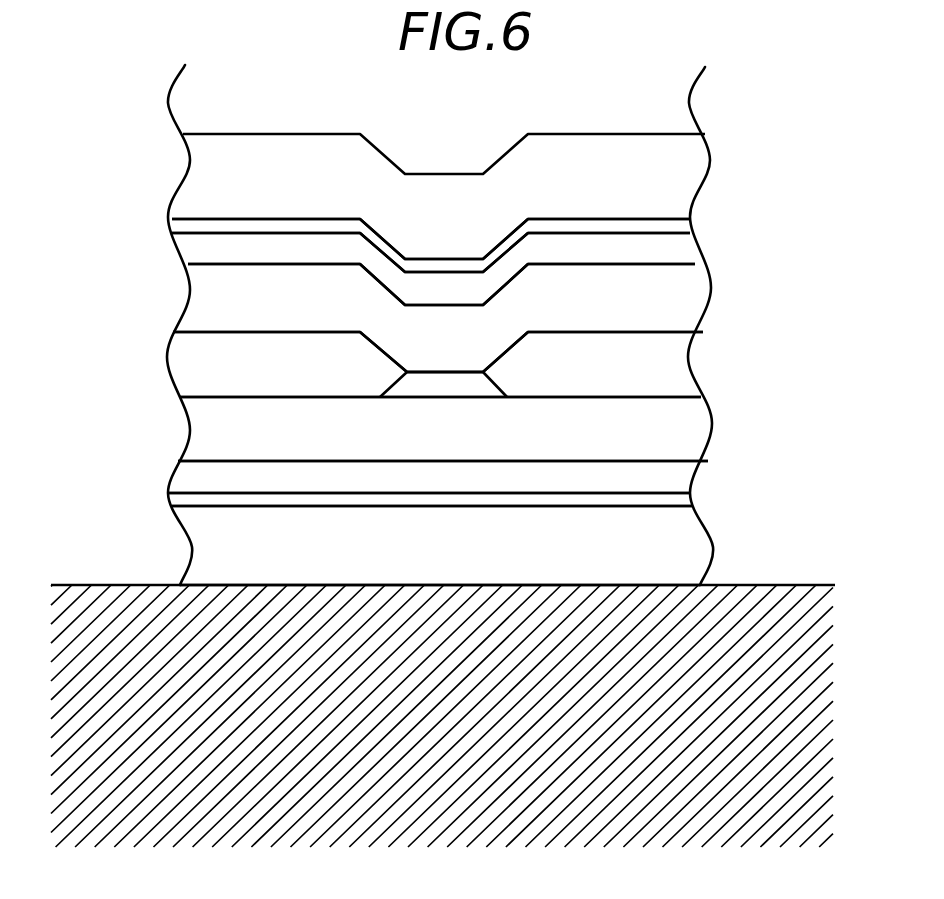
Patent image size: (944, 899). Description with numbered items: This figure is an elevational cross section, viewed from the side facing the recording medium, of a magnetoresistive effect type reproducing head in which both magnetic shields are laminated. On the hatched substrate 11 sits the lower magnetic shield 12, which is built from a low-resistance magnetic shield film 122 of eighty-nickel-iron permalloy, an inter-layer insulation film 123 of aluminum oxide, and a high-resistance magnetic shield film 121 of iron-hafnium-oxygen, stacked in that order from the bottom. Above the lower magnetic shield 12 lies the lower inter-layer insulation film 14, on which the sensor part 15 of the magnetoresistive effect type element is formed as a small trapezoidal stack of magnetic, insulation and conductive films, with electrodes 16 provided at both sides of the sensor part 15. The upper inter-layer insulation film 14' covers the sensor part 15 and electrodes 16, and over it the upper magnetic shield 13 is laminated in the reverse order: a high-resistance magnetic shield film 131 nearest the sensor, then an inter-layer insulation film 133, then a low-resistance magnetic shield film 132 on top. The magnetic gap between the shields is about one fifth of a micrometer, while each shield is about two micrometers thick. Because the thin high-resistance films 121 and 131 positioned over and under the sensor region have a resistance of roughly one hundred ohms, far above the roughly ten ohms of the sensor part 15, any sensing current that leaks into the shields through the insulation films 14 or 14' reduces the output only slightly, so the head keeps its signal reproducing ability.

The substrate 11 is at (787, 588).
The lower magnetic shield 12 is at (531, 522).
The high-resistance magnetic shield film 121 is at (672, 487).
The inter-layer insulation film 123 is at (672, 503).
The low-resistance magnetic shield film 122 is at (678, 548).
The lower inter-layer insulation film 14 is at (490, 429).
The upper inter-layer insulation film 14' is at (493, 318).
The electrodes 16 is at (665, 370).
The sensor part 15 is at (422, 390).
The upper magnetic shield 13 is at (535, 219).
The high-resistance magnetic shield film 131 is at (496, 269).
The inter-layer insulation film 133 is at (683, 228).
The low-resistance magnetic shield film 132 is at (683, 200).